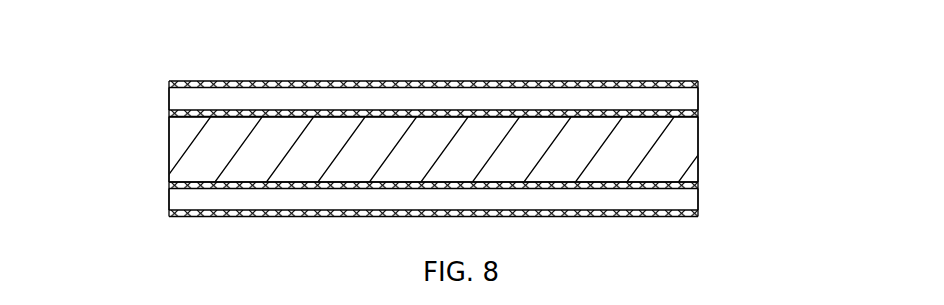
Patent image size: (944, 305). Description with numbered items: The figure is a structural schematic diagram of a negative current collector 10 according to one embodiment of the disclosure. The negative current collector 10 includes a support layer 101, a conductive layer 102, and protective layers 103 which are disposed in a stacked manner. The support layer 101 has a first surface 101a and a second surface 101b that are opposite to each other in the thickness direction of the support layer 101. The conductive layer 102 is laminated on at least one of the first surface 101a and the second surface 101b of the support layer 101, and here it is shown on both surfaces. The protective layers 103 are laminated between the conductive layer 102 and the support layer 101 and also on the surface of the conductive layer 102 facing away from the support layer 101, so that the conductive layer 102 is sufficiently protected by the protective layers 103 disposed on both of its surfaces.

The negative current collector 10 is at (410, 24).
The support layer 101 is at (185, 152).
The first surface 101a is at (277, 117).
The second surface 101b is at (272, 183).
The conductive layer 102 is at (695, 100).
The protective layer 103 is at (698, 84).